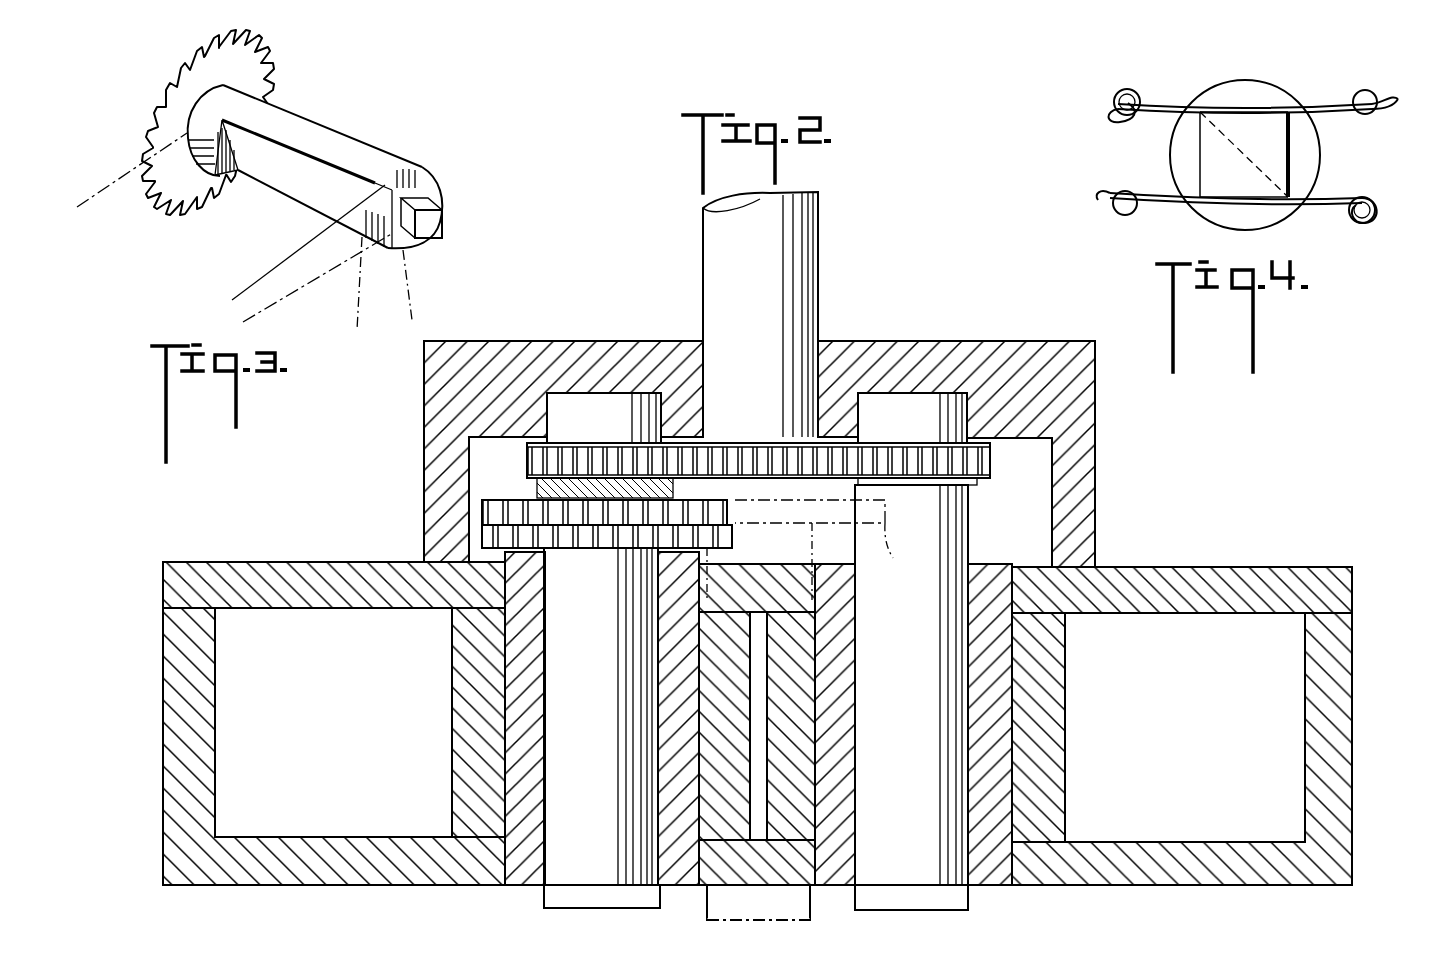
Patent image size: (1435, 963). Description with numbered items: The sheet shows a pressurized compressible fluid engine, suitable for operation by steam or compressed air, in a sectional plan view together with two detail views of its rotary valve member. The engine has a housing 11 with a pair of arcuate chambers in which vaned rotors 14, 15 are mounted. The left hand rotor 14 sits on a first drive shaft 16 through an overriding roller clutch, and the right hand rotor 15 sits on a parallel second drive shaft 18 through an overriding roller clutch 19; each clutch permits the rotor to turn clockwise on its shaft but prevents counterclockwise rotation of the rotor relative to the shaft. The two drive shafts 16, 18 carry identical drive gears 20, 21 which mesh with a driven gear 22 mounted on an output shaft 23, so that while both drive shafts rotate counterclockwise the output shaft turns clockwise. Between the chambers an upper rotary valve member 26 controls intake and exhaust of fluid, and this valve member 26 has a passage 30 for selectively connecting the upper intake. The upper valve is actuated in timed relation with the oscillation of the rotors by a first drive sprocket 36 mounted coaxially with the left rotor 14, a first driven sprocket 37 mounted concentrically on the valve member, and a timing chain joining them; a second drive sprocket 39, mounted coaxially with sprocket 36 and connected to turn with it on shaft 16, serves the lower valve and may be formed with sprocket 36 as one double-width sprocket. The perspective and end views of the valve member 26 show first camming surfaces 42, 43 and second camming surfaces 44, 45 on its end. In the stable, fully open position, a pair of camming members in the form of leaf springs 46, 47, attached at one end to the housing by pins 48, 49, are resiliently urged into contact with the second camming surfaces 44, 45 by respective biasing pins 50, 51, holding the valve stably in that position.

In FIG. 2, the housing 11 is at (287, 552).
In FIG. 2, the vaned rotor 14 is at (458, 663).
In FIG. 2, the vaned rotor 15 is at (1062, 641).
In FIG. 2, the first drive shaft 16 is at (610, 718).
In FIG. 2, the second drive shaft 18 is at (918, 719).
In FIG. 2, the overriding roller clutch 19 is at (985, 880).
In FIG. 2, the drive gear 20 is at (598, 460).
In FIG. 2, the drive gear 21 is at (912, 458).
In FIG. 2, the driven gear 22 is at (752, 455).
In FIG. 2, the output shaft 23 is at (800, 258).
In FIG. 3, the upper rotary valve member 26 is at (372, 147).
In FIG. 4, the upper rotary valve member 26 is at (1253, 90).
In FIG. 3, the passage 30 is at (278, 190).
In FIG. 4, the passage 30 is at (1270, 197).
In FIG. 2, the first drive sprocket 36 is at (497, 508).
In FIG. 2, the first driven sprocket 37 is at (811, 561).
In FIG. 3, the first driven sprocket 37 is at (250, 72).
In FIG. 2, the second drive sprocket 39 is at (723, 532).
In FIG. 3, the first camming surface 42 is at (408, 225).
In FIG. 4, the first camming surface 42 is at (1200, 157).
In FIG. 3, the first camming surface 43 is at (442, 207).
In FIG. 4, the first camming surface 43 is at (1290, 163).
In FIG. 3, the second camming surface 44 is at (422, 190).
In FIG. 4, the second camming surface 44 is at (1228, 110).
In FIG. 3, the second camming surface 45 is at (433, 228).
In FIG. 4, the second camming surface 45 is at (1230, 200).
In FIG. 4, the leaf spring 46 is at (1347, 116).
In FIG. 4, the leaf spring 47 is at (1322, 203).
In FIG. 4, the pin 48 is at (1117, 98).
In FIG. 4, the pin 49 is at (1377, 213).
In FIG. 4, the biasing pin 50 is at (1366, 90).
In FIG. 4, the biasing pin 51 is at (1125, 215).